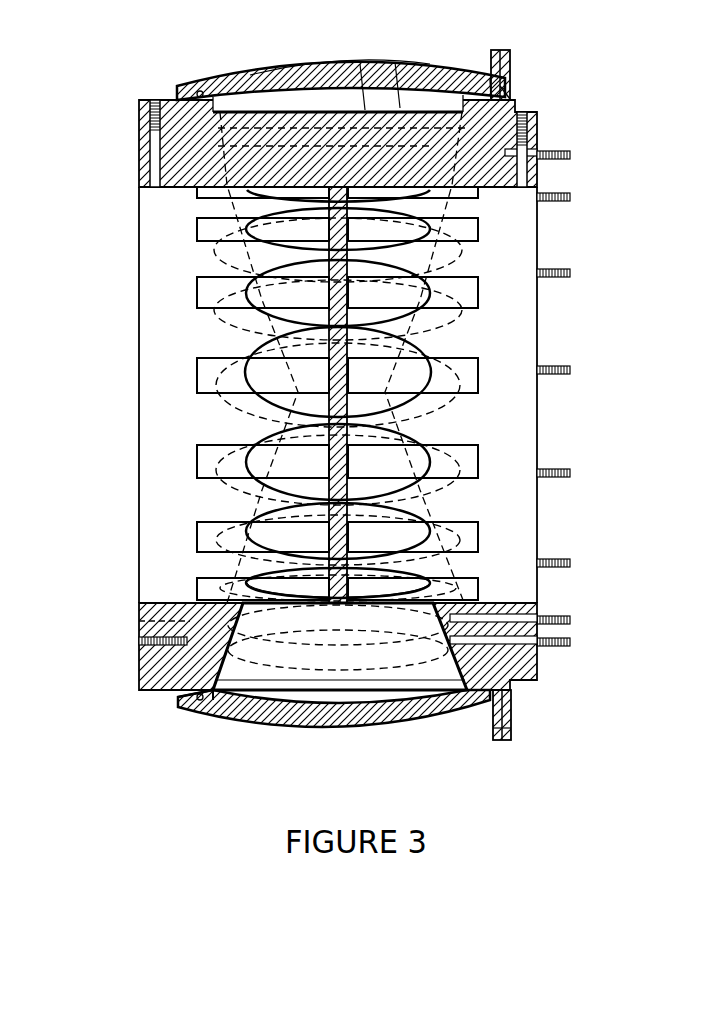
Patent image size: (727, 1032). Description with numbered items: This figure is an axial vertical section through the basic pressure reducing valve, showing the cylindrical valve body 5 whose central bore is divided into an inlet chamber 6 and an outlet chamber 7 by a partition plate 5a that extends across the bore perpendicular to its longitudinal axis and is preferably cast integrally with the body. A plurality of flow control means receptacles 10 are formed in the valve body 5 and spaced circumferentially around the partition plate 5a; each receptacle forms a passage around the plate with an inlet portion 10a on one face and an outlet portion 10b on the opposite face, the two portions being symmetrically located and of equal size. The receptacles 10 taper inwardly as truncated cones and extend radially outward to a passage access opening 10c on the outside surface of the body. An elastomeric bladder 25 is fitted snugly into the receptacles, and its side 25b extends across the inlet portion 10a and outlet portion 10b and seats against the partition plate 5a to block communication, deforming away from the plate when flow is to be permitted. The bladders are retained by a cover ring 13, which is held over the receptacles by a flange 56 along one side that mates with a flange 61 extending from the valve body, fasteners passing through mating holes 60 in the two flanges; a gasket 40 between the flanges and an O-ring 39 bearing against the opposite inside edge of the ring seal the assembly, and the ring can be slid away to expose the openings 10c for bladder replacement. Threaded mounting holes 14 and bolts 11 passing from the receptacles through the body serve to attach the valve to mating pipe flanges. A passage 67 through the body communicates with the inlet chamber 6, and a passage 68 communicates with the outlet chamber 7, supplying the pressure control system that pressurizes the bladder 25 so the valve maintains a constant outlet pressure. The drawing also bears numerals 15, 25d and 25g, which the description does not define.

The valve body 5 is at (146, 99).
The partition plate 5a is at (327, 383).
The inlet chamber 6 is at (168, 377).
The outlet chamber 7 is at (505, 375).
The flow control means receptacles 10 is at (165, 151).
The inlet portion 10a is at (250, 588).
The outlet portion 10b is at (432, 582).
The passage access opening 10c is at (460, 487).
The bolts 11 is at (566, 641).
The cover ring 13 is at (288, 66).
The mounting holes 14 is at (140, 641).
The lens holder ring 15 is at (212, 542).
The elastomeric bladder 25 is at (330, 71).
The bladder side 25b is at (315, 603).
The lens portion 25d is at (368, 110).
The lens portion 25g is at (405, 100).
The O-ring 39 is at (190, 89).
The gasket 40 is at (512, 697).
The flange 56 is at (503, 95).
The mating holes 60 is at (490, 78).
The flange 61 is at (501, 49).
The passage 67 is at (155, 99).
The passage 68 is at (521, 111).